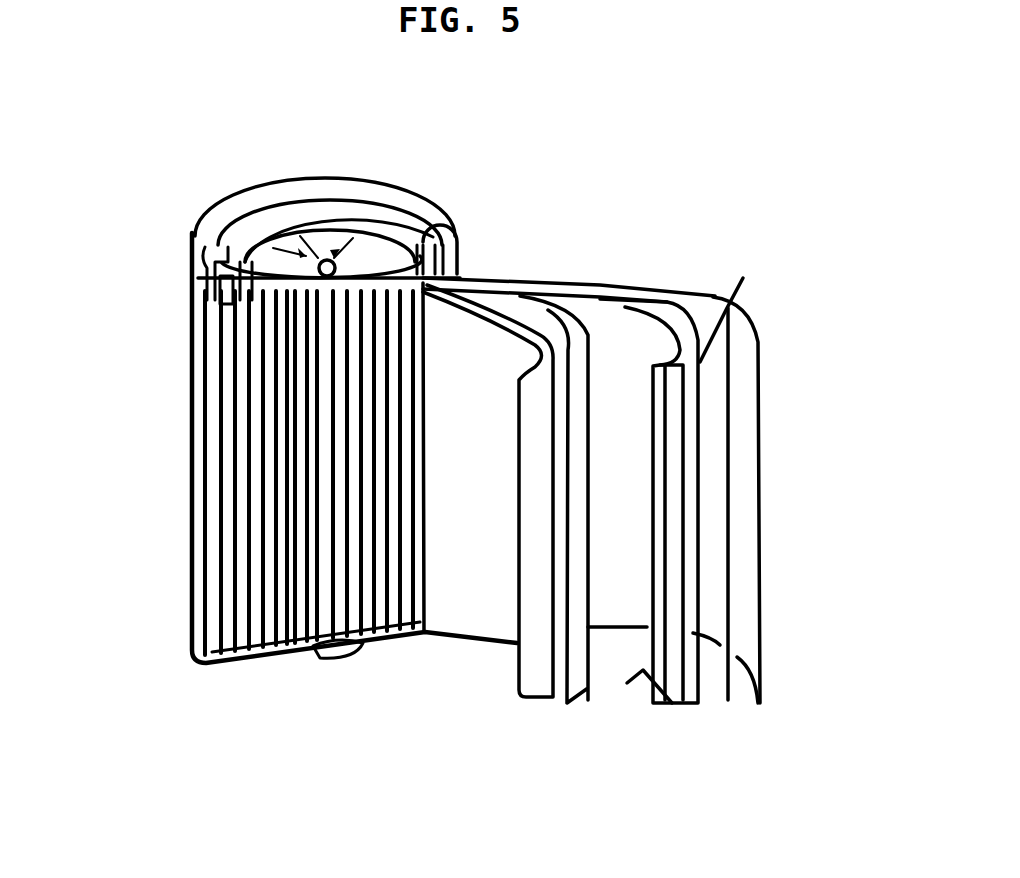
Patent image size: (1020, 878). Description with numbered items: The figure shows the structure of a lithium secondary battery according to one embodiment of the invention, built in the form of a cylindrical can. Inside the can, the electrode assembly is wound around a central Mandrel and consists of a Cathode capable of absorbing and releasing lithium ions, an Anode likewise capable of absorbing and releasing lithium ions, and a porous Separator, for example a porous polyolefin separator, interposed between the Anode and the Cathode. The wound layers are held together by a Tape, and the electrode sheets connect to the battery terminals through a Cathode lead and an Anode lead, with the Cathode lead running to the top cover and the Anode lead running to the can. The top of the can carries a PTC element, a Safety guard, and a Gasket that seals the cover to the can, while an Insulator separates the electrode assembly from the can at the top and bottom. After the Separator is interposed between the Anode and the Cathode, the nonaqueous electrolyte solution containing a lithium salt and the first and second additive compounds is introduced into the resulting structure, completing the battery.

The safety guard Safety guard is at (295, 242).
The gasket Gasket is at (196, 237).
The insulator Insulator is at (192, 290).
The PTC element PTC is at (453, 225).
The cathode lead Cathode lead is at (410, 222).
The porous separator Separator is at (648, 287).
The cathode Cathode is at (468, 600).
The anode Anode is at (616, 605).
The anode lead Anode lead is at (743, 278).
The tape Tape is at (758, 420).
The mandrel Mandrel is at (326, 595).